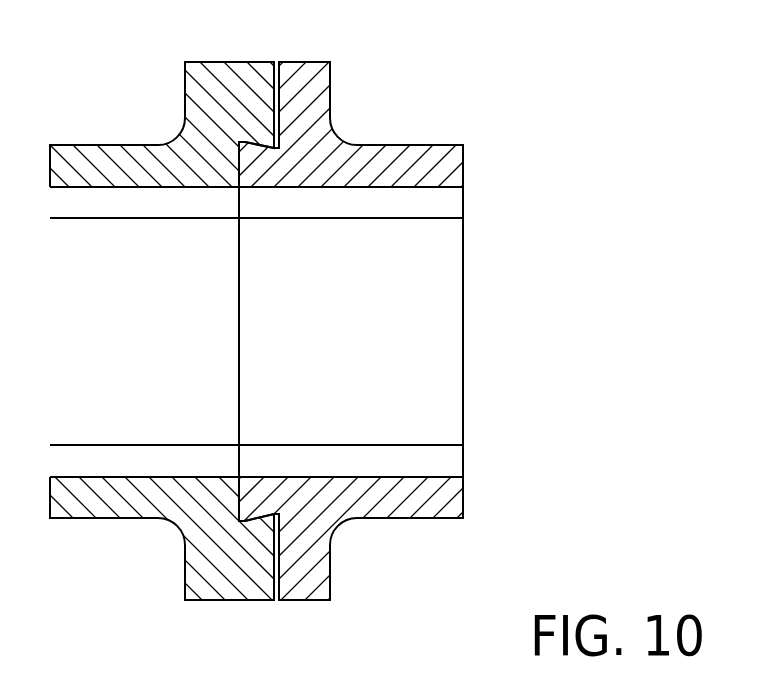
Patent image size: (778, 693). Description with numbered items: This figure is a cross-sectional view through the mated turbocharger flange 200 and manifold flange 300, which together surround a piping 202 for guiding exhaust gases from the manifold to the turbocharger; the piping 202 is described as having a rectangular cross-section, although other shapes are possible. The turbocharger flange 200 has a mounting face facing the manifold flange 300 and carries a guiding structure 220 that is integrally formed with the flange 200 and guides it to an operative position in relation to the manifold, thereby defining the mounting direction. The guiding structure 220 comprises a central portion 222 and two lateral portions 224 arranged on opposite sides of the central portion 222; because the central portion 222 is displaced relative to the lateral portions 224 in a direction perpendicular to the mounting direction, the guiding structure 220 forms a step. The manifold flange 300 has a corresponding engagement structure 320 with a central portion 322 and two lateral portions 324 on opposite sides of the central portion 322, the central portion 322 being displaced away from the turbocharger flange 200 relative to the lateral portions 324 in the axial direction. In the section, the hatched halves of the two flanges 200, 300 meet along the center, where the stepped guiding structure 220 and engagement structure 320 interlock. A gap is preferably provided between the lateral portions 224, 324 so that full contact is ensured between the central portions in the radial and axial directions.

The turbocharger flange 200 is at (332, 108).
The piping 202 is at (422, 302).
The guiding structure 220 is at (268, 173).
The central portion 222 is at (263, 483).
The lateral portions 224 is at (308, 88).
The manifold flange 300 is at (183, 553).
The engagement structure 320 is at (232, 175).
The central portion 322 is at (222, 492).
The lateral portions 324 is at (258, 132).